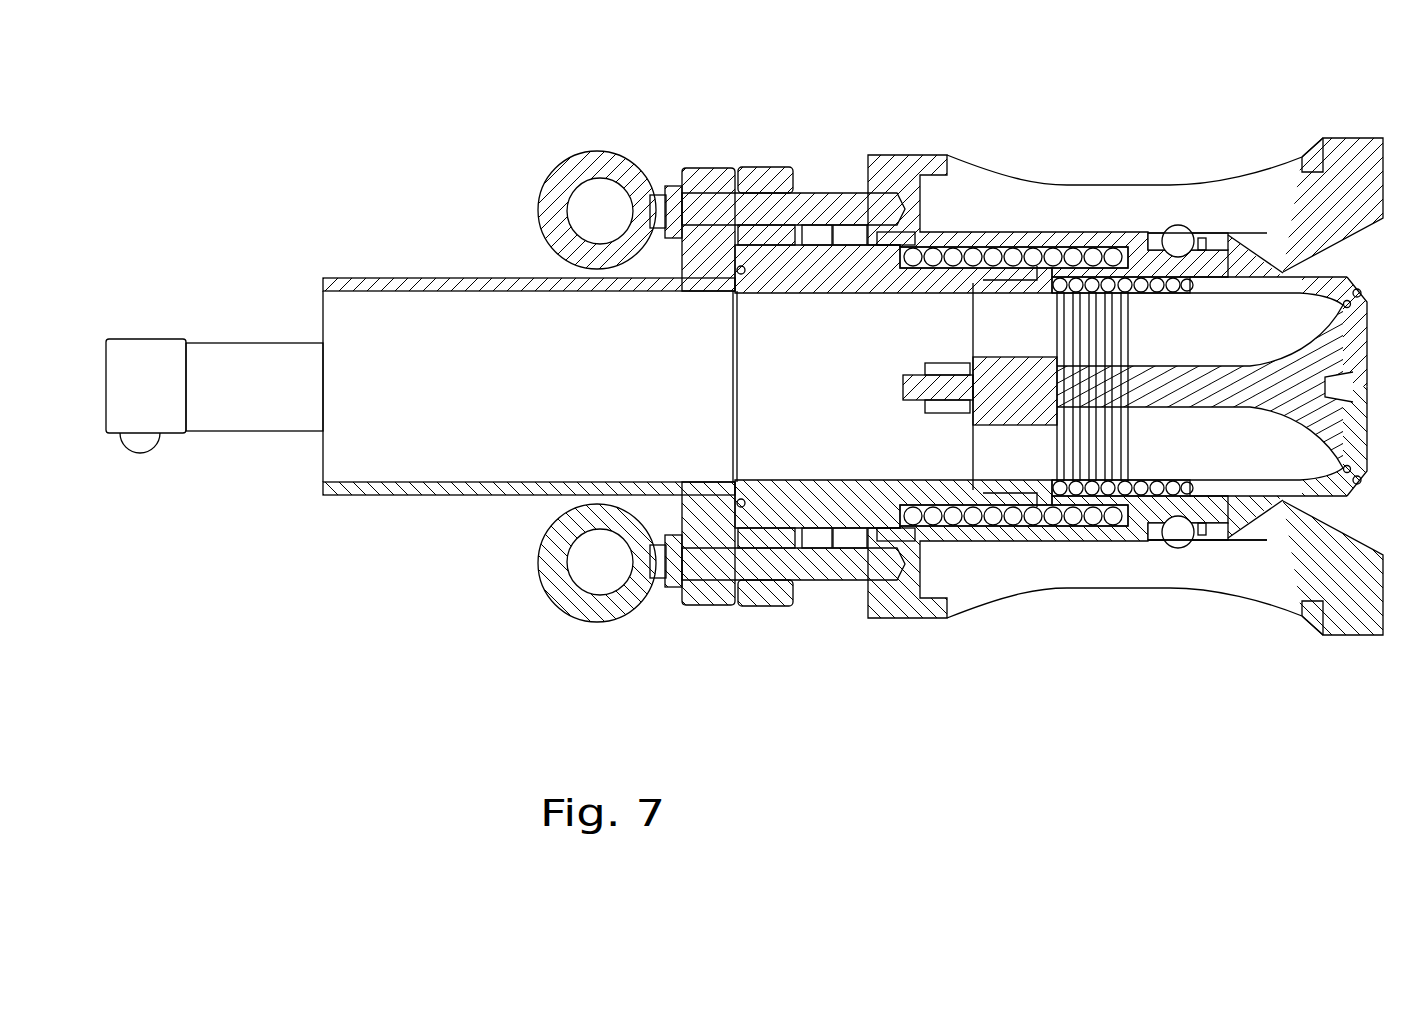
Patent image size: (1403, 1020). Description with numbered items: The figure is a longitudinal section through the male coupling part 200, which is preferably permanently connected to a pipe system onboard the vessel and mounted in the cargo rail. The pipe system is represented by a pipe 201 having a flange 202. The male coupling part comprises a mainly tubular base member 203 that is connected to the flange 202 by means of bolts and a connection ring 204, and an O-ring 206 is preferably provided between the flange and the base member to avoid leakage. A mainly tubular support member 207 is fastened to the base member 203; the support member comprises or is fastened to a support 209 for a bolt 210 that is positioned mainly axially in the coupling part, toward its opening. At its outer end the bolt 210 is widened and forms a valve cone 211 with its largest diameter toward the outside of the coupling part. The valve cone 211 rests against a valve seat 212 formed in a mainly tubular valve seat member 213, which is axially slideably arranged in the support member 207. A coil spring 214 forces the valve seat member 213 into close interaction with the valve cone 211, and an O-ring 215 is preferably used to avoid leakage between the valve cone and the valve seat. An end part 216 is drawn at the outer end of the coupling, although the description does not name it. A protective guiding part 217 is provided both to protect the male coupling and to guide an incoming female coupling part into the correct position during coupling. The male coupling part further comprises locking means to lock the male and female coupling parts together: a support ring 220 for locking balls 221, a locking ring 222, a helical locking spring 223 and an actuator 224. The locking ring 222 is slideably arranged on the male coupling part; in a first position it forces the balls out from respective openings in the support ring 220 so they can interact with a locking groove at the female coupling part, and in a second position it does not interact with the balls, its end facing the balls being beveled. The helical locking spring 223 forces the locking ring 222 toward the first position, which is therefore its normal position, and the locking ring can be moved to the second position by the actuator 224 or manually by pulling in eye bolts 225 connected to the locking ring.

The male coupling part 200 is at (428, 660).
The pipe 201 is at (346, 453).
The flange 202 is at (708, 262).
The base member 203 is at (803, 503).
The connection ring 204 is at (765, 597).
The O-ring 206 is at (737, 503).
The support member 207 is at (1003, 283).
The support 209 is at (1005, 408).
The bolt 210 is at (1210, 403).
The valve cone 211 is at (1340, 343).
The valve seat 212 is at (1340, 307).
The valve seat member 213 is at (1280, 270).
The coil spring 214 is at (1087, 482).
The O-ring 215 is at (1330, 463).
The end cap 216 is at (1346, 502).
The protective guiding part 217 is at (1302, 580).
The support ring 220 is at (1208, 528).
The locking balls 221 is at (1180, 543).
The locking ring 222 is at (1127, 237).
The helical locking spring 223 is at (978, 252).
The actuator 224 is at (267, 396).
The eye bolts 225 is at (588, 560).